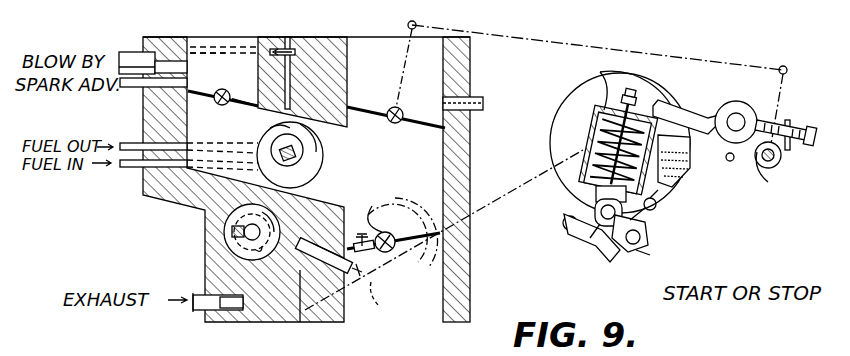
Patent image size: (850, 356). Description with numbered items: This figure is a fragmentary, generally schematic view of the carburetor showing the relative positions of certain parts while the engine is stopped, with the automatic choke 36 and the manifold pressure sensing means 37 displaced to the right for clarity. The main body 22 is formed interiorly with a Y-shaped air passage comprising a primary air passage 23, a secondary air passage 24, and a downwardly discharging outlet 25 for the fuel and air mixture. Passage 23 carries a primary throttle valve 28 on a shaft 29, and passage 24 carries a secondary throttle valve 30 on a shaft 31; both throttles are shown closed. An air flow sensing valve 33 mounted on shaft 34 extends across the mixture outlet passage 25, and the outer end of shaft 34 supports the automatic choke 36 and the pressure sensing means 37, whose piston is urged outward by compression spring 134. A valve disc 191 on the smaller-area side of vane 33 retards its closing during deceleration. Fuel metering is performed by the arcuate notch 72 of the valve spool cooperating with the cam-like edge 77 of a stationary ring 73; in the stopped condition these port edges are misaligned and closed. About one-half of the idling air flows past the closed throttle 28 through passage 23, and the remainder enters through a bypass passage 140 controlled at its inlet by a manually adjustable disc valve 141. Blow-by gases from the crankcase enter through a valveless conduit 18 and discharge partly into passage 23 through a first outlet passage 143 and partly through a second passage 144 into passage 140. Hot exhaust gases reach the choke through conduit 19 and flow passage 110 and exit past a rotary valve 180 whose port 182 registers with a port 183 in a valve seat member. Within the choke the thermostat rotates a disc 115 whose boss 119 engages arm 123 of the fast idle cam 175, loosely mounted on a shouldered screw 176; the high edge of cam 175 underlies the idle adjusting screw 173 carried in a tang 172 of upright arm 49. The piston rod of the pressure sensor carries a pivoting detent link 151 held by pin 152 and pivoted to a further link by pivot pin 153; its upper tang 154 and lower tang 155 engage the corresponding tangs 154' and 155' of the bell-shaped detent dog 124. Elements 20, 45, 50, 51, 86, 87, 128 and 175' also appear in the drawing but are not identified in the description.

The valveless conduit 18 is at (134, 52).
The conduit 19 is at (197, 295).
The spark advance conduit 20 is at (129, 88).
The main body 22 is at (164, 211).
The primary air passage 23 is at (230, 42).
The secondary air passage 24 is at (445, 77).
The downwardly discharging outlet 25 is at (444, 320).
The primary throttle valve 28 is at (246, 108).
The shaft 29 is at (212, 103).
The secondary throttle valve 30 is at (416, 132).
The shaft 31 is at (391, 123).
The air flow sensing valve 33 is at (408, 246).
The shaft 34 is at (444, 230).
The automatic choke 36 is at (547, 135).
The manifold pressure sensing means 37 is at (574, 155).
The link 45 is at (768, 182).
The upright arm 49 is at (788, 72).
The connecting link 50 is at (525, 50).
The link 51 is at (404, 59).
The arcuate notch 72 is at (276, 136).
The stationary ring 73 is at (318, 180).
The cam-like edge 77 is at (322, 152).
The fuel inlet conduit 86 is at (131, 170).
The fuel outlet conduit 87 is at (131, 143).
The flow passage 110 is at (372, 275).
The disc 115 is at (644, 88).
The boss 119 is at (680, 176).
The arm 123 is at (676, 115).
The bell-shaped detent member 124 is at (641, 237).
The lower body block 128 is at (302, 322).
The compression spring 134 is at (588, 81).
The passage 140 is at (320, 42).
The manually adjustable disc valve 141 is at (298, 42).
The first outlet passage 143 is at (190, 66).
The second passage 144 is at (212, 56).
The pivoting detent link 151 is at (585, 238).
The pin 152 is at (596, 210).
The pivot pin 153 is at (562, 228).
The upper tang 154 is at (578, 255).
The upper tang of detent dog 154' is at (667, 208).
The lower tang 155 is at (627, 253).
The lower detent of detent dog 155' is at (657, 261).
The tang 172 is at (778, 165).
The adjusting screw 173 is at (808, 146).
The fast idle cam 175 is at (793, 112).
The pin 175' is at (733, 172).
The shouldered screw 176 is at (739, 113).
The rotary valve 180 is at (222, 247).
The port 182 is at (226, 229).
The port 183 is at (256, 258).
The valve disc 191 is at (392, 252).